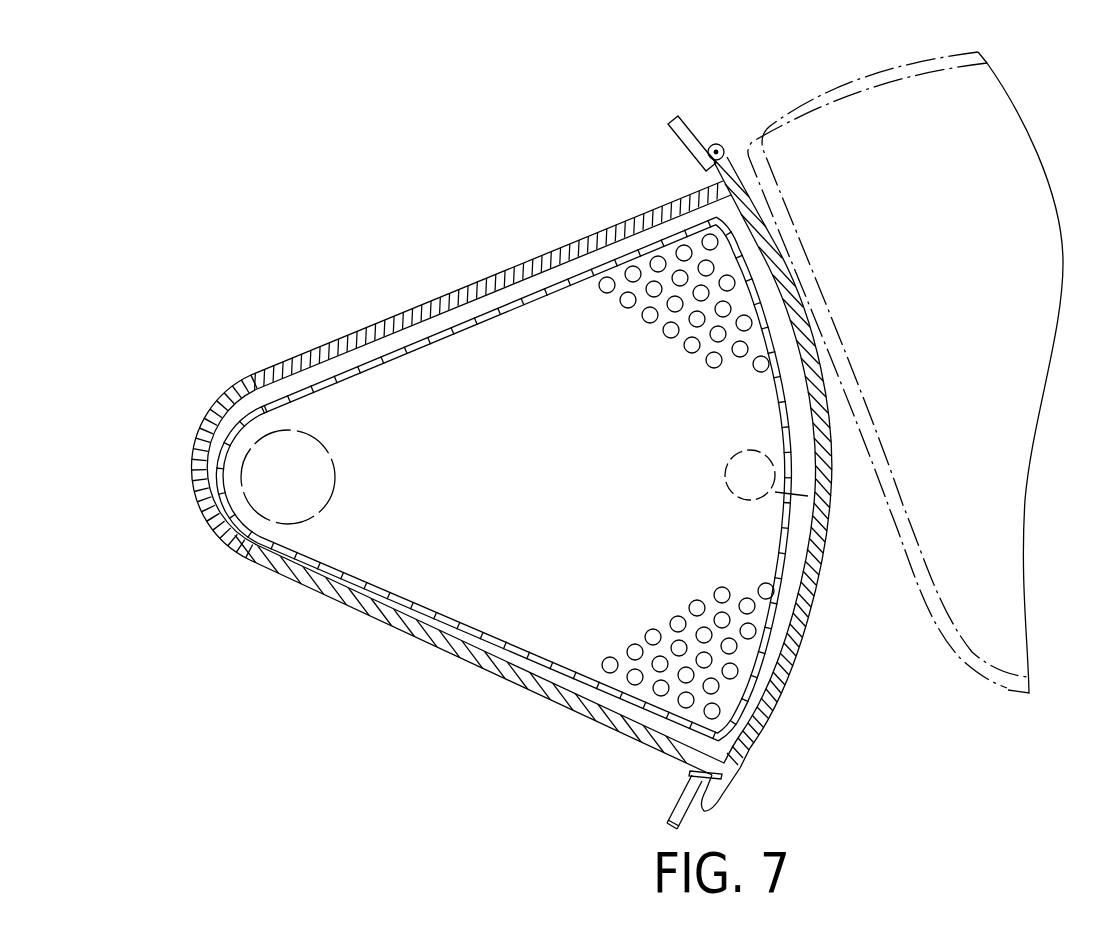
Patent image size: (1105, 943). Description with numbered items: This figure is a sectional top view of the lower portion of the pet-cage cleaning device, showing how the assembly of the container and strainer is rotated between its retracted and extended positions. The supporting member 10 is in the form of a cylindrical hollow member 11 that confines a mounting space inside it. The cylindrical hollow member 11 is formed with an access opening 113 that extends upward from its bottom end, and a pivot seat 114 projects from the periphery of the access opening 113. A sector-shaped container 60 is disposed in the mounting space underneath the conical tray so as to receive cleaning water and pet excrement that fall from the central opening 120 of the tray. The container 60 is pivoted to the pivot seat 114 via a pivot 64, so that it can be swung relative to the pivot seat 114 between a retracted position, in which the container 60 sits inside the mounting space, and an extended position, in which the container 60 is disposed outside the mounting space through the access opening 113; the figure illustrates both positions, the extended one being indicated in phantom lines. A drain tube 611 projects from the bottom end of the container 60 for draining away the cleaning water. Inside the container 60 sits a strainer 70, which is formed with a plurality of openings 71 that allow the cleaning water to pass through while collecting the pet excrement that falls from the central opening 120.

The supporting member 10 is at (678, 801).
The cylindrical hollow member 11 is at (668, 818).
The access opening 113 is at (716, 770).
The pivot seat 114 is at (696, 143).
The central opening 120 is at (287, 440).
The sector-shaped container 60 is at (334, 603).
The drain tube 611 is at (828, 515).
The pivot 64 is at (712, 145).
The strainer 70 is at (497, 307).
The openings 71 is at (573, 277).